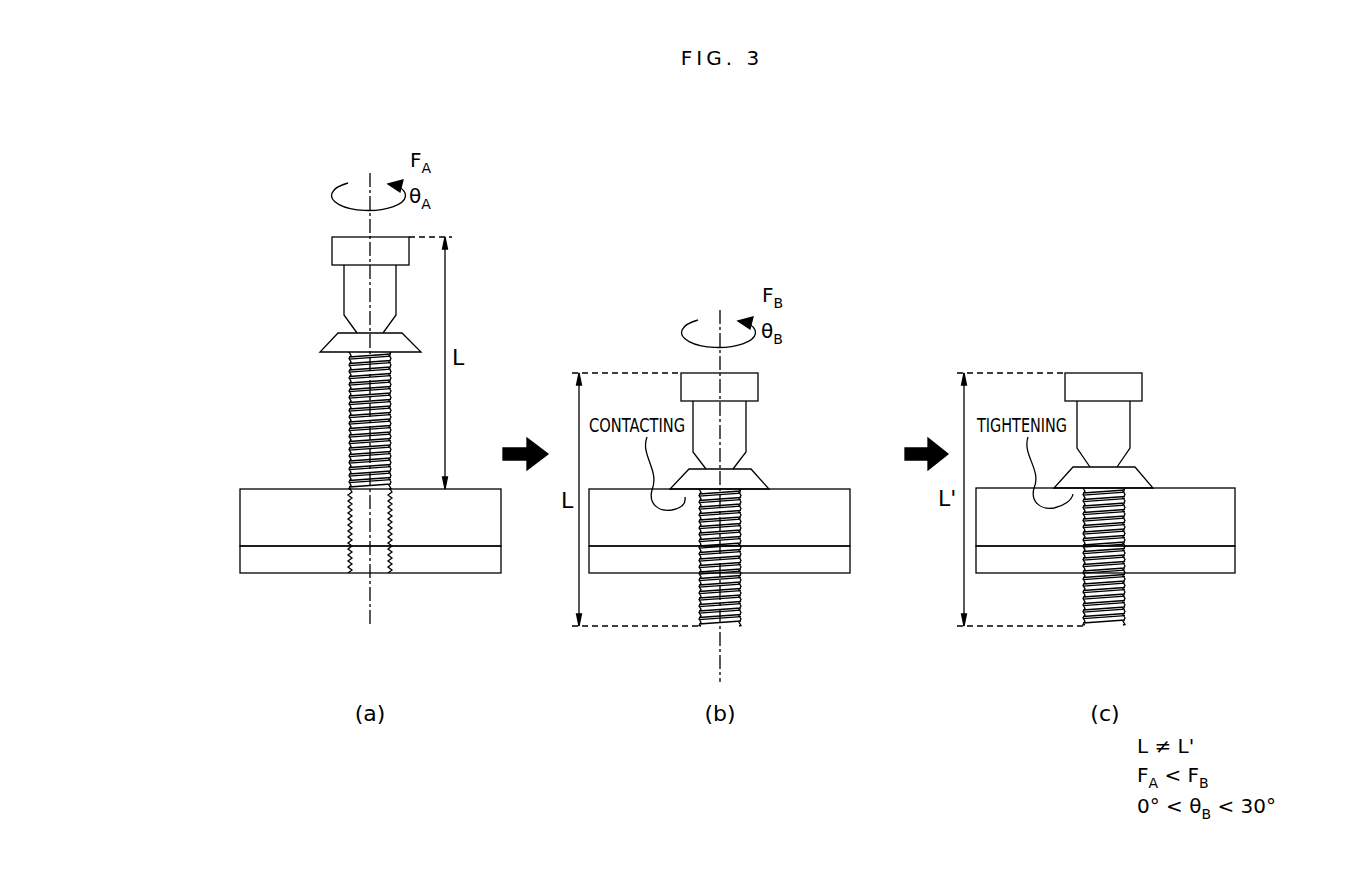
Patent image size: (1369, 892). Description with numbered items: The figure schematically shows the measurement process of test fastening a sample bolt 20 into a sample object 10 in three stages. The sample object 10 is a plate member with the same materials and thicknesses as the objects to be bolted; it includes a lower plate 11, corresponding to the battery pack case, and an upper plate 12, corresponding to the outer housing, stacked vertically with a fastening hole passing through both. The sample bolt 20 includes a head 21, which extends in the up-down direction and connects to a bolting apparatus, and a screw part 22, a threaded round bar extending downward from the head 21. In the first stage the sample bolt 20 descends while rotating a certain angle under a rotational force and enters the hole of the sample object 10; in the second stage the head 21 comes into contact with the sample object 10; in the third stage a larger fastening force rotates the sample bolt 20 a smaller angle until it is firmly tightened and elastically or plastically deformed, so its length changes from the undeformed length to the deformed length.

The sample object 10 is at (734, 530).
The lower plate 11 is at (735, 559).
The upper plate 12 is at (250, 518).
The sample bolt 20 is at (738, 431).
The head 21 is at (308, 237).
The screw part 22 is at (739, 489).